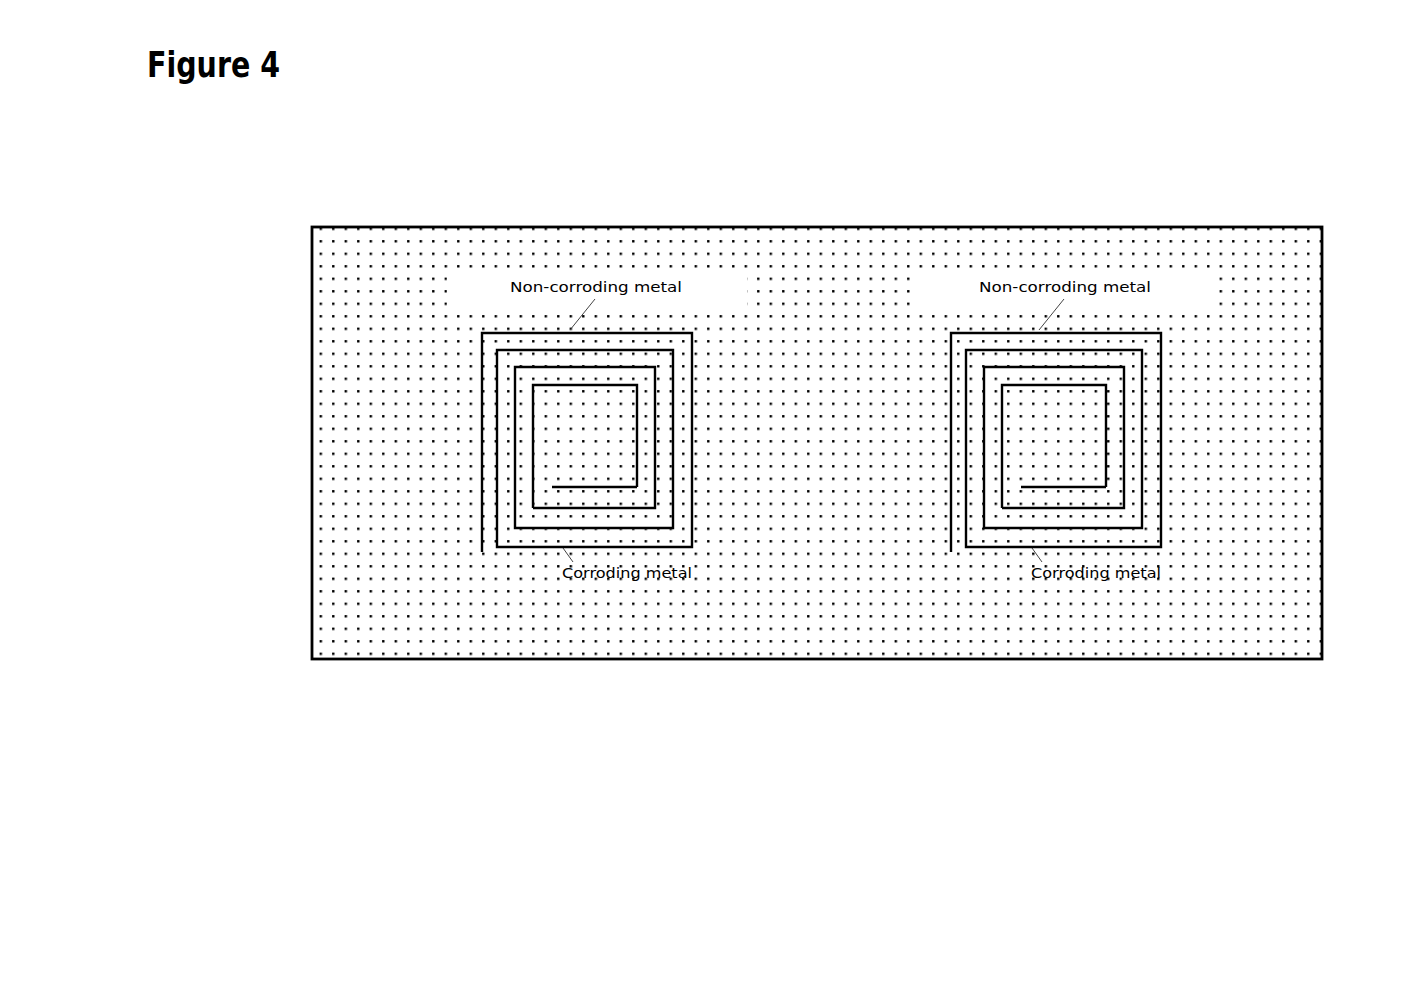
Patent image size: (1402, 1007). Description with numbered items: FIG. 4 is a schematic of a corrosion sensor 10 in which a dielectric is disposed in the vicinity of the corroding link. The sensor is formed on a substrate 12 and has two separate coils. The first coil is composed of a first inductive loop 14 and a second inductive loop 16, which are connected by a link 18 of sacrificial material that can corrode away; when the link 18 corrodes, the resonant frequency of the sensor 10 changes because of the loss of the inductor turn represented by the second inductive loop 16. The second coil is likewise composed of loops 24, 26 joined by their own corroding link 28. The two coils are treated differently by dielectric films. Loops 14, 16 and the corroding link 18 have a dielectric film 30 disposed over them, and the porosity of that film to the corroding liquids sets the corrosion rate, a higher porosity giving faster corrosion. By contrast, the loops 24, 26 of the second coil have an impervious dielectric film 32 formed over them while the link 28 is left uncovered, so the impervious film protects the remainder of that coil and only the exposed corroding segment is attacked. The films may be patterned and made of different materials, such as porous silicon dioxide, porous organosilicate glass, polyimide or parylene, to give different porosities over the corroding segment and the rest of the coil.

The corrosion sensor 10 is at (804, 176).
The substrate 12 is at (374, 310).
The first inductive loop 14 is at (466, 481).
The second inductive loop 16 is at (635, 499).
The link 18 is at (524, 511).
The first inductive loop of second coil 24 is at (945, 518).
The second inductive loop of second coil 26 is at (1121, 485).
The corroding link 28 is at (1000, 520).
The dielectric film 30 is at (502, 588).
The impervious dielectric film 32 is at (1206, 589).